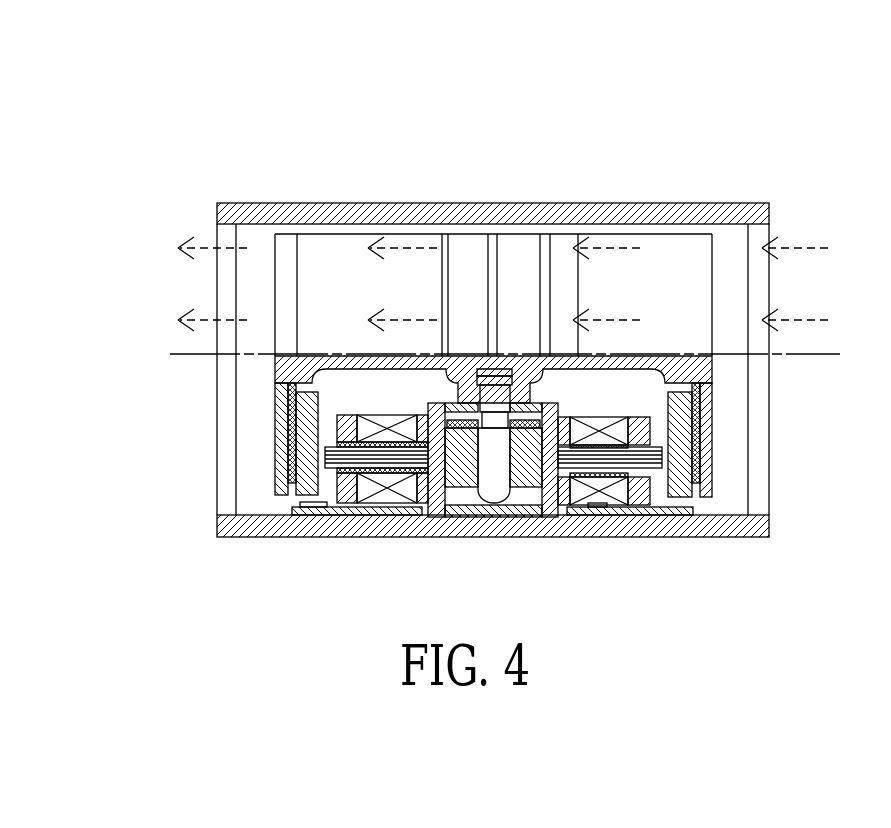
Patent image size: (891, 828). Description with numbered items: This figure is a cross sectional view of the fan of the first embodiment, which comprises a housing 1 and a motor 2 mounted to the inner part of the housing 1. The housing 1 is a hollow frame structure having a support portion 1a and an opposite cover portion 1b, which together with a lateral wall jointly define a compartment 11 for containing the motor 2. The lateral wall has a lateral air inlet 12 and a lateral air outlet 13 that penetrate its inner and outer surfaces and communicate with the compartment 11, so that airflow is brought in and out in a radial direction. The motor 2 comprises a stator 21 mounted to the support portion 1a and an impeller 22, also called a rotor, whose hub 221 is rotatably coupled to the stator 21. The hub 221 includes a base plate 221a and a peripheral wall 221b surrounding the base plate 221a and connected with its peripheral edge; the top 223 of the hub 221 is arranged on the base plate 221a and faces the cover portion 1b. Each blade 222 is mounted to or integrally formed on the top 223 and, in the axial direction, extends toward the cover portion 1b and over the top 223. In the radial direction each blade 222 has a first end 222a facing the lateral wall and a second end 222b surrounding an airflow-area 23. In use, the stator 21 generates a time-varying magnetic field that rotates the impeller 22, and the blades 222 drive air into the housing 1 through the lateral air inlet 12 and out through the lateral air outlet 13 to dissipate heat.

The housing 1 is at (493, 360).
The support portion 1a is at (218, 422).
The cover portion 1b is at (223, 205).
The compartment 11 is at (755, 417).
The lateral air inlet 12 is at (786, 296).
The lateral air outlet 13 is at (195, 283).
The motor 2 is at (547, 289).
The stator 21 is at (643, 493).
The impeller 22 is at (547, 289).
The hub 221 is at (547, 317).
The base plate 221a is at (663, 365).
The peripheral wall 221b is at (708, 450).
The blade 222 is at (338, 234).
The first end 222a is at (712, 236).
The second end 222b is at (578, 234).
The top 223 is at (300, 365).
The airflow-area 23 is at (507, 256).